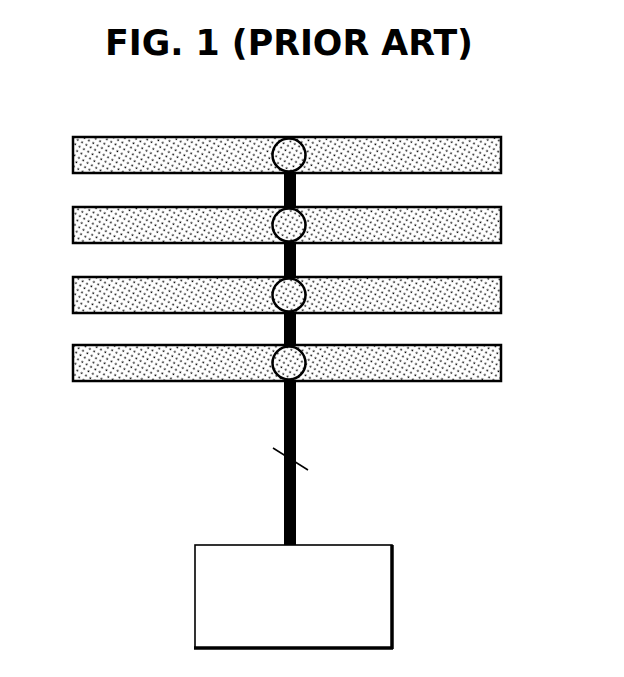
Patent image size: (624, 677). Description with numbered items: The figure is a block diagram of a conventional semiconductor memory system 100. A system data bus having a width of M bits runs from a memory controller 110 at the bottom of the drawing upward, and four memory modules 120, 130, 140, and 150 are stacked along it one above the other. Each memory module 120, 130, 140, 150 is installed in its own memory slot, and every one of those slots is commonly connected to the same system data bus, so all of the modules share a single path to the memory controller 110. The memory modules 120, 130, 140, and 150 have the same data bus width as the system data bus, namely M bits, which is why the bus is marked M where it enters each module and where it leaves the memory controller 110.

The memory system 100 is at (321, 351).
The memory controller 110 is at (393, 600).
The memory module 120 is at (501, 361).
The memory module 130 is at (501, 292).
The memory module 140 is at (501, 223).
The memory module 150 is at (501, 154).